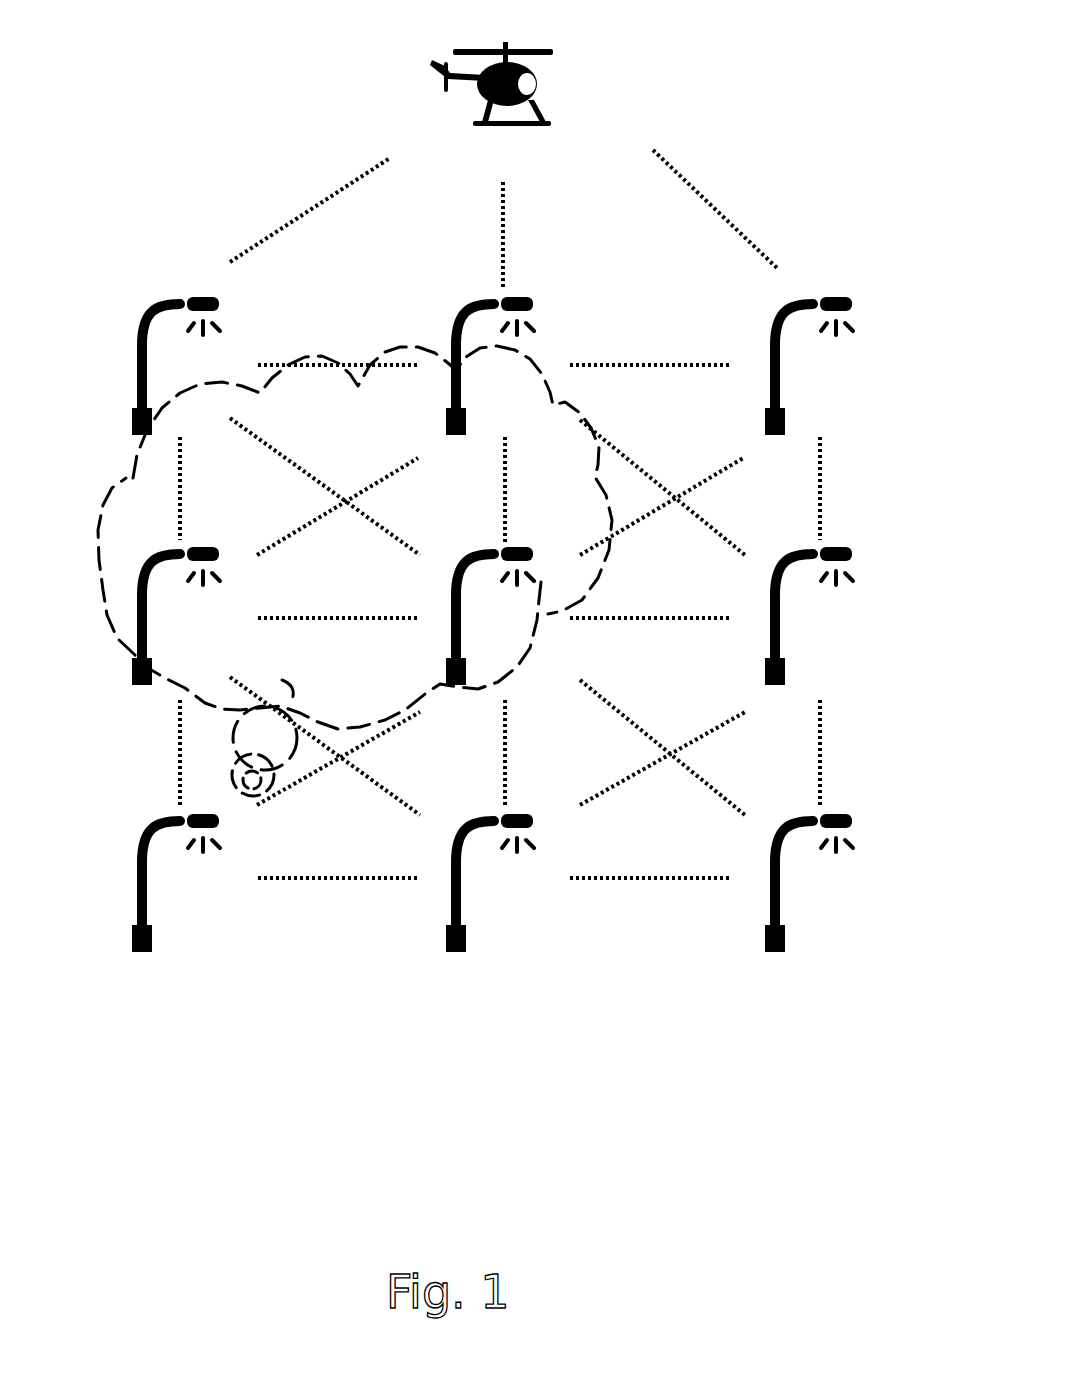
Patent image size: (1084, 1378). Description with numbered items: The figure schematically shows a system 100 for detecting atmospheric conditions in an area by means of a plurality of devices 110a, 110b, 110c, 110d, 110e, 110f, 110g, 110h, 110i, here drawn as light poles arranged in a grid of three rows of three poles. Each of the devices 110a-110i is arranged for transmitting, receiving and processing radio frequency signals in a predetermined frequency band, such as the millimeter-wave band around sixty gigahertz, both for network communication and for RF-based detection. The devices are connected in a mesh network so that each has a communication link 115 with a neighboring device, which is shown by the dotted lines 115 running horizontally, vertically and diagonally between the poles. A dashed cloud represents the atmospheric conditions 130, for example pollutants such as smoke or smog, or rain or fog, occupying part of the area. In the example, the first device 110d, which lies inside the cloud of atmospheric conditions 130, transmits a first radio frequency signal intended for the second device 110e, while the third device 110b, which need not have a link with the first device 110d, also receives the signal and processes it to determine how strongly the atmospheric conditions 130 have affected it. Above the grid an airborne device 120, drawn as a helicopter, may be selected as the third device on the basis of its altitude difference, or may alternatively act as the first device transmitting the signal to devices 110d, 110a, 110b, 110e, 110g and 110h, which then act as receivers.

The system 100 is at (503, 578).
The device 110a is at (166, 276).
The third device 110b is at (523, 278).
The device 110c is at (830, 282).
The first device 110d is at (193, 535).
The second device 110e is at (530, 535).
The device 110f is at (832, 535).
The device 110g is at (189, 908).
The device 110h is at (500, 908).
The device 110i is at (815, 908).
The communication link 115 is at (712, 200).
The airborne device 120 is at (560, 88).
The atmospheric conditions 130 is at (372, 358).